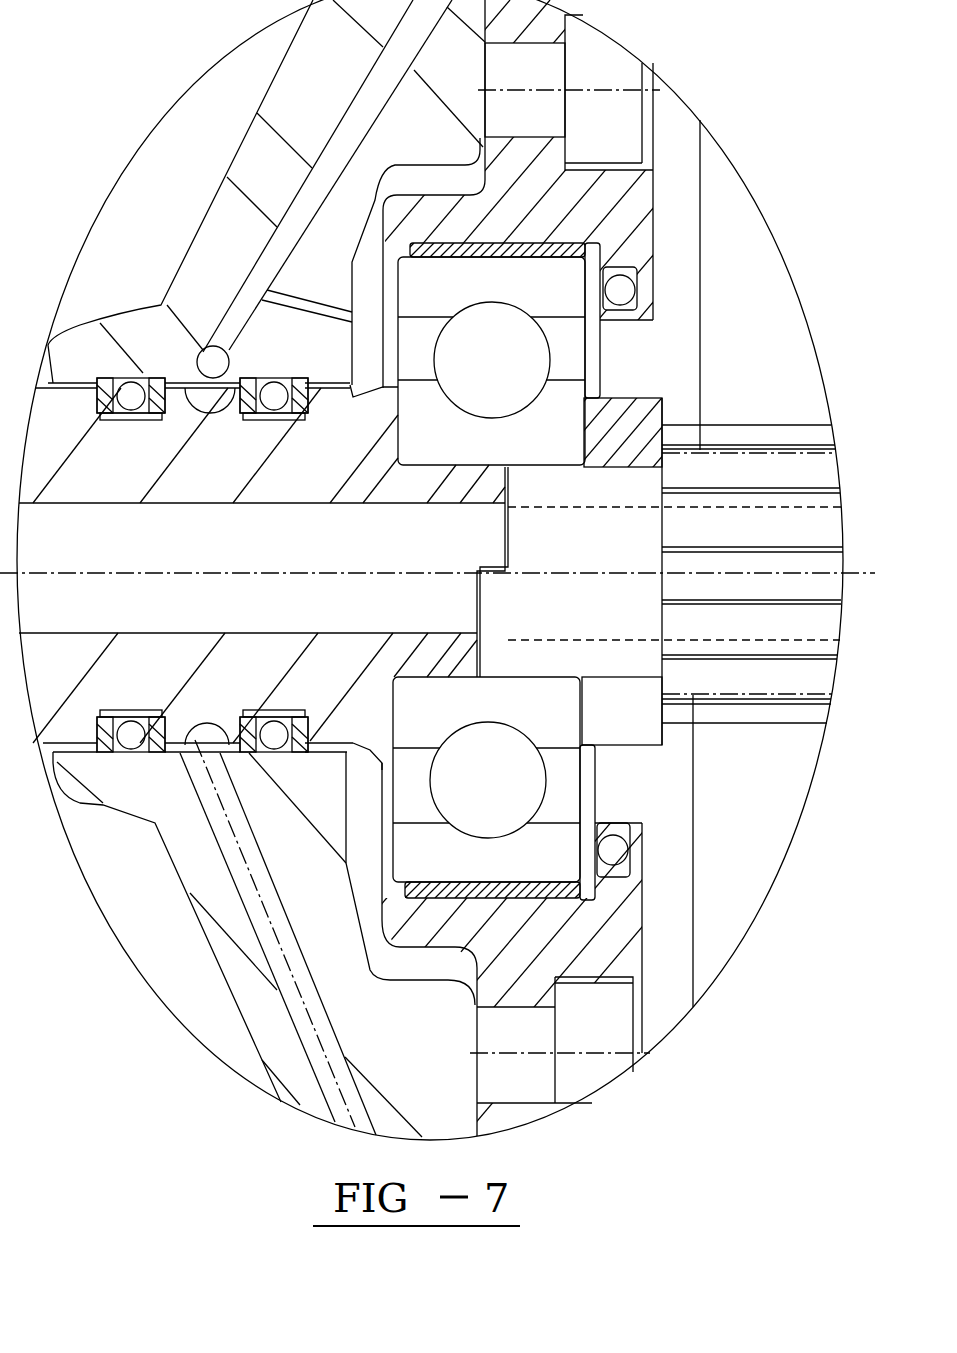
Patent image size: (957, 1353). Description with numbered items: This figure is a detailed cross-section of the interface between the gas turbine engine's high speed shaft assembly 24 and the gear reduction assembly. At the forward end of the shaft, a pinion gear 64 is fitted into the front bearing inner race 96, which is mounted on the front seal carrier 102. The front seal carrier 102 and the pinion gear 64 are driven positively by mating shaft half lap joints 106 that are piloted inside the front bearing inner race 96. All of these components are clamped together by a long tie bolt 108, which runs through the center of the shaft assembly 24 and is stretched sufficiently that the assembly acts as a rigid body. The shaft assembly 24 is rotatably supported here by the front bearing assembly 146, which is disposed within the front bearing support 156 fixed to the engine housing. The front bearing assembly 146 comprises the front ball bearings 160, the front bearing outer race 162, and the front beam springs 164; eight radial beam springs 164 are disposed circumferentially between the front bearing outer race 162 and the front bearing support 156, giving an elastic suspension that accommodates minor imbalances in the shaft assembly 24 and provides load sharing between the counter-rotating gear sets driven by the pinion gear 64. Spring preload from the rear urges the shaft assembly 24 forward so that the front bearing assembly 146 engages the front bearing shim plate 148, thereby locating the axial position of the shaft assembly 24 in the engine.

The high speed shaft assembly 24 is at (308, 788).
The pinion gear 64 is at (765, 535).
The front bearing inner race 96 is at (506, 451).
The front seal carrier 102 is at (175, 465).
The shaft half lap joints 106 is at (480, 608).
The tie bolt 108 is at (364, 608).
The front bearing assembly 146 is at (605, 372).
The front bearing shim plate 148 is at (593, 303).
The front bearing support 156 is at (538, 952).
The front ball bearings 160 is at (514, 374).
The front bearing outer race 162 is at (512, 292).
The front beam springs 164 is at (577, 240).